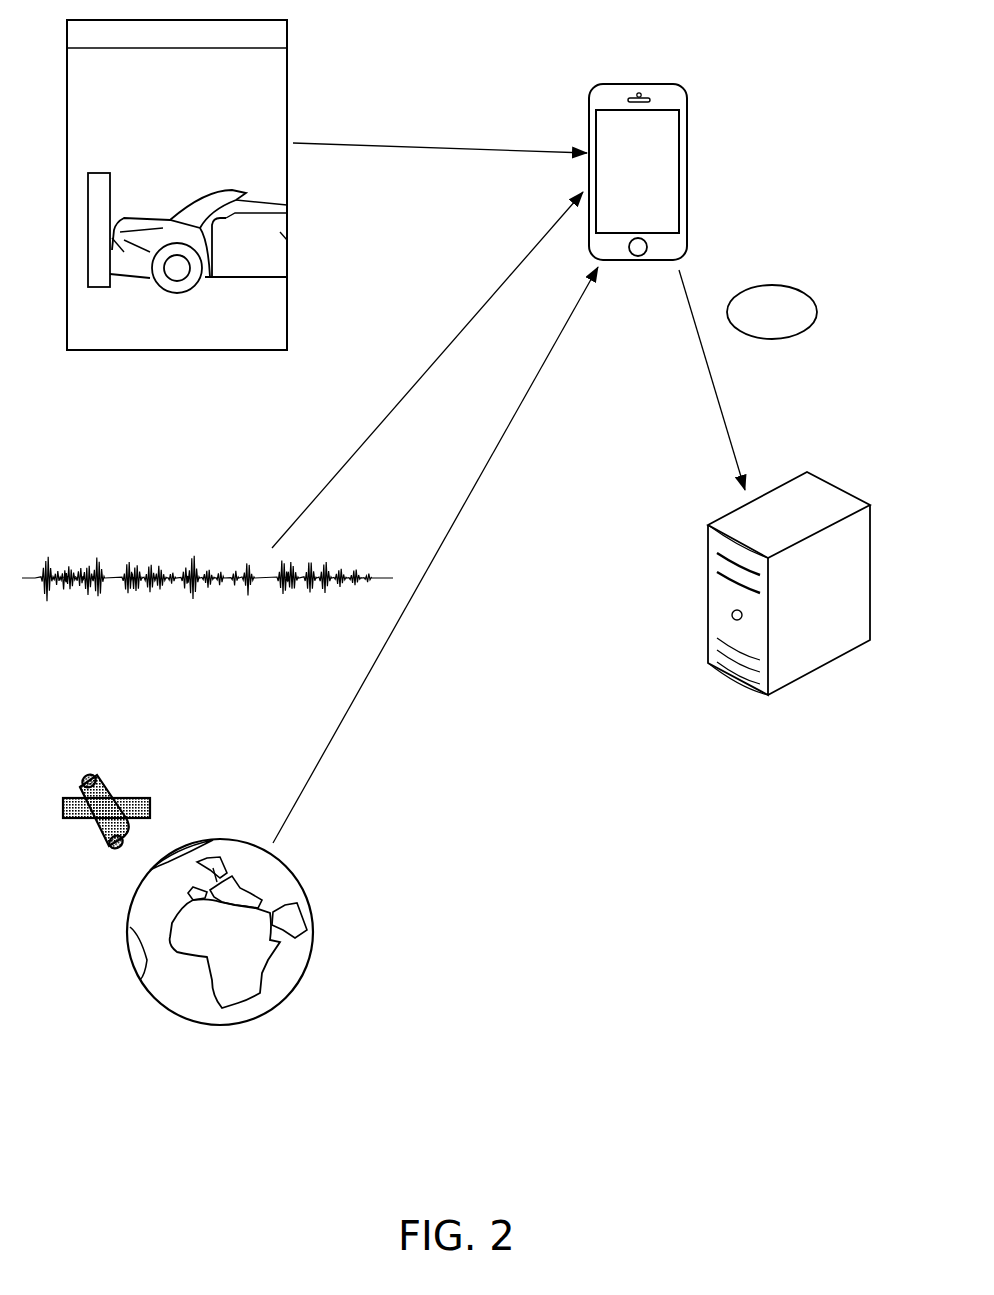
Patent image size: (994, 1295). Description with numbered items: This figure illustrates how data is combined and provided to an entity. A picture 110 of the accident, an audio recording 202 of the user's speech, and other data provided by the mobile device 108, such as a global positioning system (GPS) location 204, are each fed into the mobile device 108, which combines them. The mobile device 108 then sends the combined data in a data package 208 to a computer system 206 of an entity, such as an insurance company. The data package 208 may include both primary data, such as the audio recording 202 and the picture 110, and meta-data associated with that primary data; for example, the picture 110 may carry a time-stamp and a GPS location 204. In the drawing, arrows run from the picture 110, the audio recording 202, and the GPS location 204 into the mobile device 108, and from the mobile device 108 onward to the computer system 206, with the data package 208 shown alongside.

The mobile device 108 is at (687, 125).
The picture 110 is at (300, 52).
The audio recording 202 is at (172, 491).
The global positioning system (GPS) location 204 is at (337, 859).
The computer system 206 is at (837, 492).
The data package 208 is at (775, 285).